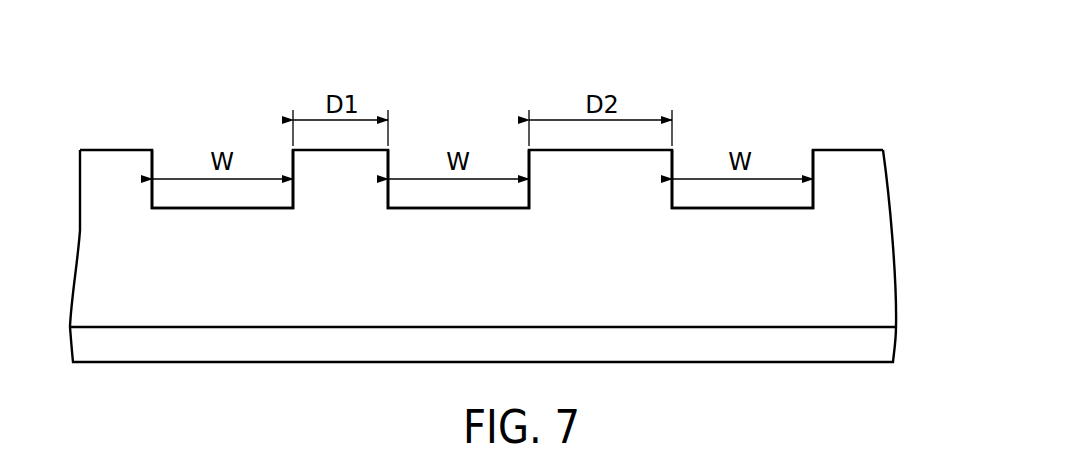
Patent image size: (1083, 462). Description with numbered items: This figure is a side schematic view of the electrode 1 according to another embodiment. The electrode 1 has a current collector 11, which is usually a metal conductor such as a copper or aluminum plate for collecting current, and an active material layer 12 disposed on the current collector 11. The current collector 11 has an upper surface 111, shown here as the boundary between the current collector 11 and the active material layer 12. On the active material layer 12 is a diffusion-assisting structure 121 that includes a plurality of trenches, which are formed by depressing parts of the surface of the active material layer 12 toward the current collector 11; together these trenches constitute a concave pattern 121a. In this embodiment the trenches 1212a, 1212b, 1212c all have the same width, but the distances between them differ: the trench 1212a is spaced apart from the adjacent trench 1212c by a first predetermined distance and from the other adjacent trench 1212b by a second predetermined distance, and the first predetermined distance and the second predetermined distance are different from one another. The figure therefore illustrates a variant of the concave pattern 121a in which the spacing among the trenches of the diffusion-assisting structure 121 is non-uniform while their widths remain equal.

The electrode 1 is at (913, 197).
The current collector 11 is at (877, 350).
The upper surface 111 is at (864, 327).
The active material layer 12 is at (875, 264).
The diffusion-assisting structure 121 is at (853, 148).
The concave pattern 121a is at (153, 72).
The trench 1212a is at (426, 162).
The trench 1212b is at (780, 162).
The trench 1212c is at (190, 162).